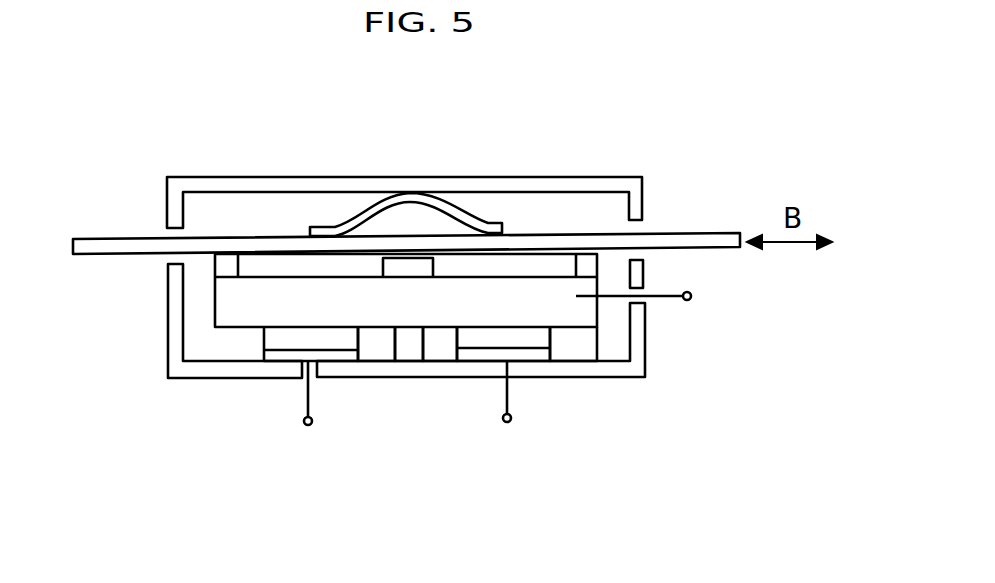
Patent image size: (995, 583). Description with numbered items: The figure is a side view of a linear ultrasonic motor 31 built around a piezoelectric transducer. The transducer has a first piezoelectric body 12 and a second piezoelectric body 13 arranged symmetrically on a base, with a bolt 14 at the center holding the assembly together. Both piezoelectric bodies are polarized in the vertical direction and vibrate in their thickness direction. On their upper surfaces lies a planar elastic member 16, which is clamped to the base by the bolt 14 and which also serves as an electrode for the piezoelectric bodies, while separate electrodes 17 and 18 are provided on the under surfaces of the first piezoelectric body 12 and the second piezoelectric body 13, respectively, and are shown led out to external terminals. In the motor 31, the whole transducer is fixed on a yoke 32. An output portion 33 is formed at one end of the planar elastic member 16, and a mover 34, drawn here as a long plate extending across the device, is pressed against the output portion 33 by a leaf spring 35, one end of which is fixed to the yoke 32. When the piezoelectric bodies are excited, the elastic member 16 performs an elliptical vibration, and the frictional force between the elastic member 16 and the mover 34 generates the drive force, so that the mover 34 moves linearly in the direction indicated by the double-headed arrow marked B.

The first piezoelectric body 12 is at (343, 340).
The second piezoelectric body 13 is at (528, 340).
The bolt 14 is at (415, 267).
The planar elastic member 16 is at (585, 317).
The electrode 17 is at (327, 355).
The electrode 18 is at (515, 354).
The linear ultrasonic motor 31 is at (423, 418).
The yoke 32 is at (413, 178).
The output portion 33 is at (588, 258).
The mover 34 is at (570, 240).
The leaf spring 35 is at (452, 210).